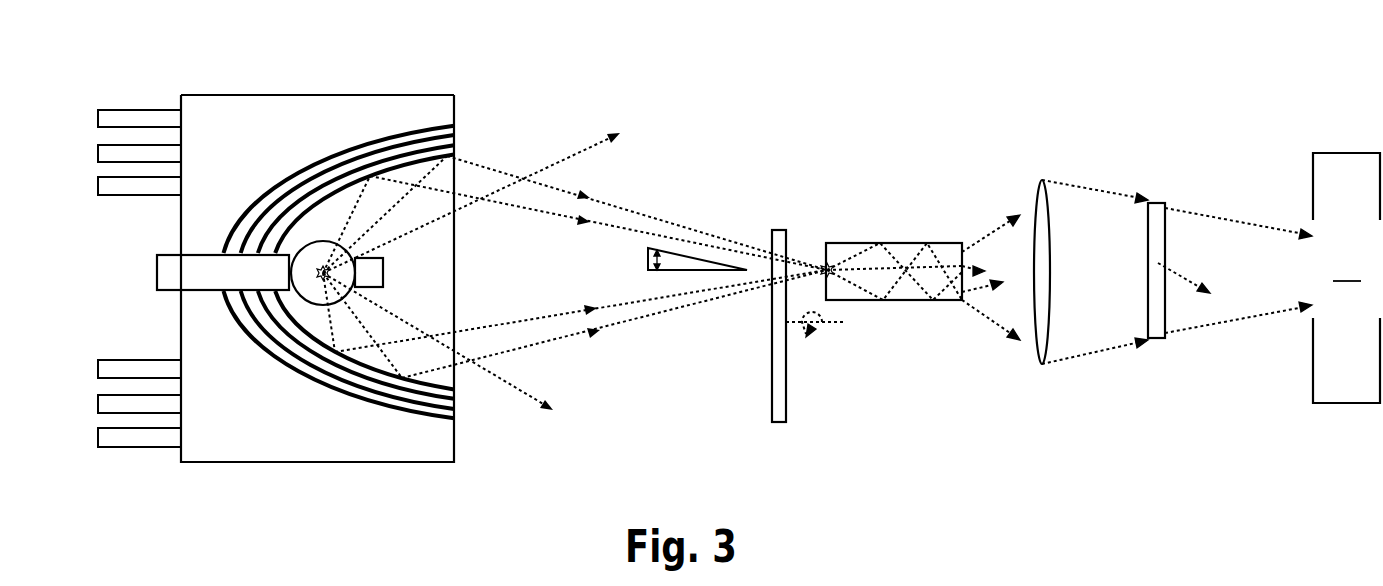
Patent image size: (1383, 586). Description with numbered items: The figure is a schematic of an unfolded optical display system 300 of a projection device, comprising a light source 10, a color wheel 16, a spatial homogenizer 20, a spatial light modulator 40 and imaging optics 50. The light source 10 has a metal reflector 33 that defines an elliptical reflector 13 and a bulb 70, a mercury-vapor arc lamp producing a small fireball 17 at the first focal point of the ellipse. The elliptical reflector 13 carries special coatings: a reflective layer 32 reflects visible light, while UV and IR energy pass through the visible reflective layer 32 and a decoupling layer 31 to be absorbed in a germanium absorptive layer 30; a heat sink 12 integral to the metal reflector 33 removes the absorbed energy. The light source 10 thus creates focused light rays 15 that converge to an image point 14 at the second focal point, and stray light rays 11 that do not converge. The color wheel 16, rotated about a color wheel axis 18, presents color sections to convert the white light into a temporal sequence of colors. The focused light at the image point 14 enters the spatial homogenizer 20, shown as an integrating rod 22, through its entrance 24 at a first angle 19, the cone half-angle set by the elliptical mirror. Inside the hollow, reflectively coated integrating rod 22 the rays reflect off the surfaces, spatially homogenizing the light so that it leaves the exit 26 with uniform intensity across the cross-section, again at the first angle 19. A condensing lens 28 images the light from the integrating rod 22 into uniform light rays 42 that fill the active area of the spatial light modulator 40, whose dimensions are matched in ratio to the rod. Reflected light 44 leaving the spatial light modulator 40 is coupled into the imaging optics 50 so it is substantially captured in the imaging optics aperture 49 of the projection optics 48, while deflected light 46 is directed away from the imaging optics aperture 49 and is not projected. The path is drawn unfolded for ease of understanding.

The light source 10 is at (317, 273).
The stray light rays 11 is at (450, 210).
The heat sink 12 is at (98, 195).
The elliptical reflector 13 is at (258, 197).
The image point 14 is at (832, 267).
The focused light rays 15 is at (643, 214).
The color wheel 16 is at (787, 408).
The fireball 17 is at (247, 328).
The color wheel axis 18 is at (840, 322).
The first angle 19 is at (647, 265).
The spatial homogenizer 20 is at (884, 276).
The integrating rod 22 is at (862, 243).
The entrance 24 is at (822, 267).
The exit 26 is at (972, 225).
The condensing lens 28 is at (1050, 237).
The absorptive layer 30 is at (377, 144).
The decoupling layer 31 is at (327, 163).
The reflective layer 32 is at (418, 154).
The metal reflector 33 is at (247, 94).
The spatial light modulator 40 is at (1155, 203).
The uniform light rays 42 is at (1095, 352).
The reflected light 44 is at (1217, 327).
The deflected light 46 is at (1183, 275).
The projection optics 48 is at (1313, 188).
The imaging optics aperture 49 is at (1347, 268).
The imaging optics 50 is at (1315, 319).
The bulb 70 is at (157, 255).
The optical display system 300 is at (827, 127).